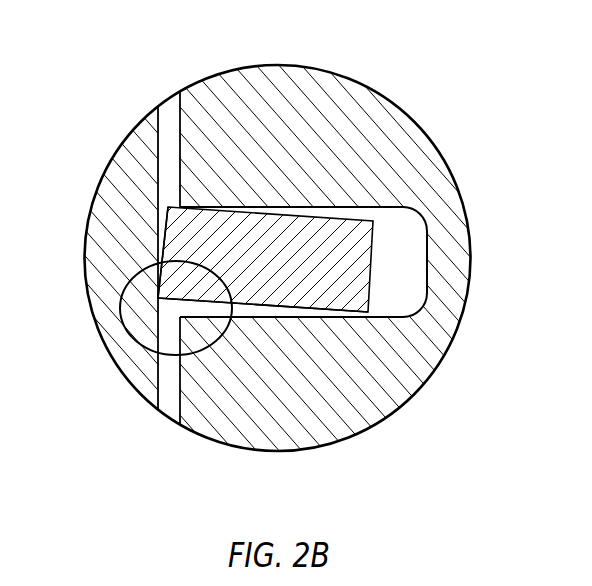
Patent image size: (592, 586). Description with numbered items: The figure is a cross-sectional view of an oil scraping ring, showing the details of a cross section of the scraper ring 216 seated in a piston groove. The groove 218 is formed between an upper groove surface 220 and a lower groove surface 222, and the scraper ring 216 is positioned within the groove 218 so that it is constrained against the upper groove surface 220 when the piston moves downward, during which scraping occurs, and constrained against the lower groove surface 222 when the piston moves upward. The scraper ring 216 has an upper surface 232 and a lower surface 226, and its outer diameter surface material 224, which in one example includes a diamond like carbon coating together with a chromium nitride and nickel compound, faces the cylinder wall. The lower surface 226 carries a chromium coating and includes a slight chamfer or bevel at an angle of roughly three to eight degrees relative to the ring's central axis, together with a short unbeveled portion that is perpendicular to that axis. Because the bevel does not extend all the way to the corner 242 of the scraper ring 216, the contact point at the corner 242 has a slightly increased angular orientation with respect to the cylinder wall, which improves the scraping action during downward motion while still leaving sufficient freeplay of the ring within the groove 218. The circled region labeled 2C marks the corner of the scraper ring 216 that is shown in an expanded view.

The scraper ring 216 is at (337, 283).
The groove 218 is at (397, 250).
The upper groove surface 220 is at (342, 207).
The lower groove surface 222 is at (268, 318).
The outer diameter surface material 224 is at (167, 228).
The lower surface 226 is at (213, 306).
The upper surface 232 is at (285, 205).
The corner 242 is at (158, 298).
The expanded view of a corner of the scraper ring 2C is at (120, 308).